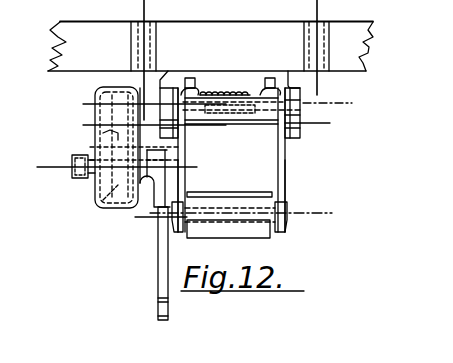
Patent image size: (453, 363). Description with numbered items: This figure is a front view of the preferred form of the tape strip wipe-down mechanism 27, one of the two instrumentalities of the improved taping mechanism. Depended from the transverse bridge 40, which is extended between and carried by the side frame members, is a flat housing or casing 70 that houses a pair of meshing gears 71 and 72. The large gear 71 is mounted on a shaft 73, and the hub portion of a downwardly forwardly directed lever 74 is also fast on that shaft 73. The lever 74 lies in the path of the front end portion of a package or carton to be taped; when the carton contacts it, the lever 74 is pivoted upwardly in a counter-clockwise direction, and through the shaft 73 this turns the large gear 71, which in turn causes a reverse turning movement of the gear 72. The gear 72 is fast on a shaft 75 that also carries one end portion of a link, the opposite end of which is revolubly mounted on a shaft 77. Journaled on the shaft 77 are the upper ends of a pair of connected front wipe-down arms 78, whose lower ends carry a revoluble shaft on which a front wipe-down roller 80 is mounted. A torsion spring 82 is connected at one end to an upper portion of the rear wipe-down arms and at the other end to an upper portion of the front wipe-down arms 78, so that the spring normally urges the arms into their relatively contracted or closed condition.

The tape strip wipe-down mechanism 27 is at (292, 153).
The transverse bridge 40 is at (192, 38).
The flat housing 70 is at (95, 113).
The gear 71 is at (112, 207).
The gear 72 is at (95, 90).
The shaft 73 is at (72, 170).
The lever 74 is at (158, 258).
The shaft 75 is at (97, 133).
The shaft 77 is at (215, 113).
The front wipe-down arms 78 is at (182, 172).
The front wipe-down roller 80 is at (272, 235).
The torsion spring 82 is at (238, 92).